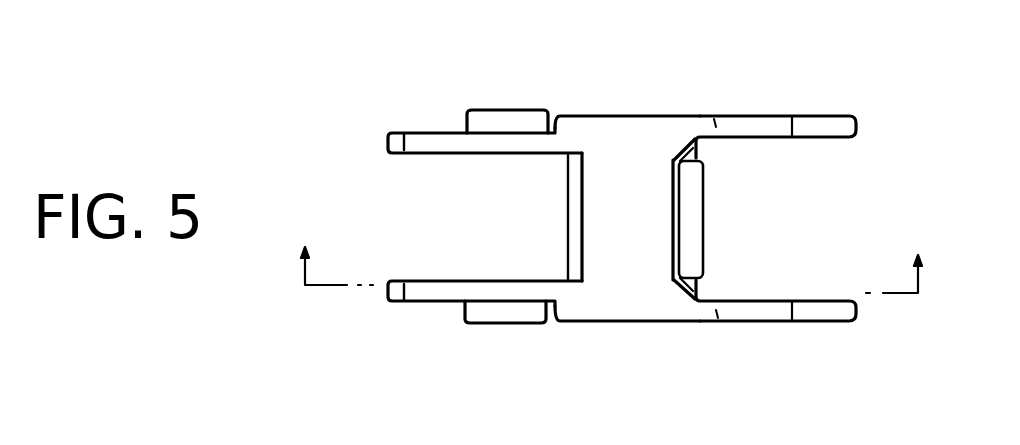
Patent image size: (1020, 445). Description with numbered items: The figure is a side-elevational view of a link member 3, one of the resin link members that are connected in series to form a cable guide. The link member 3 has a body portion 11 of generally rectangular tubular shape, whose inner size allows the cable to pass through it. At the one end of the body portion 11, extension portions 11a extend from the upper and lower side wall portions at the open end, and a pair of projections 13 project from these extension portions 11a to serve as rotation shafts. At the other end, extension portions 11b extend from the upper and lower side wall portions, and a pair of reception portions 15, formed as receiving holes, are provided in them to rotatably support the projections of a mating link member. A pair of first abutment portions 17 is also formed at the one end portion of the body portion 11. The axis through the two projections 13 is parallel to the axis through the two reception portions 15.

The link member 3 is at (282, 140).
The body portion 11 is at (623, 115).
The extension portions 11a is at (418, 132).
The extension portions 11b is at (818, 116).
The projections 13 is at (515, 109).
The reception portions 15 is at (735, 116).
The first abutment portions 17 is at (388, 143).